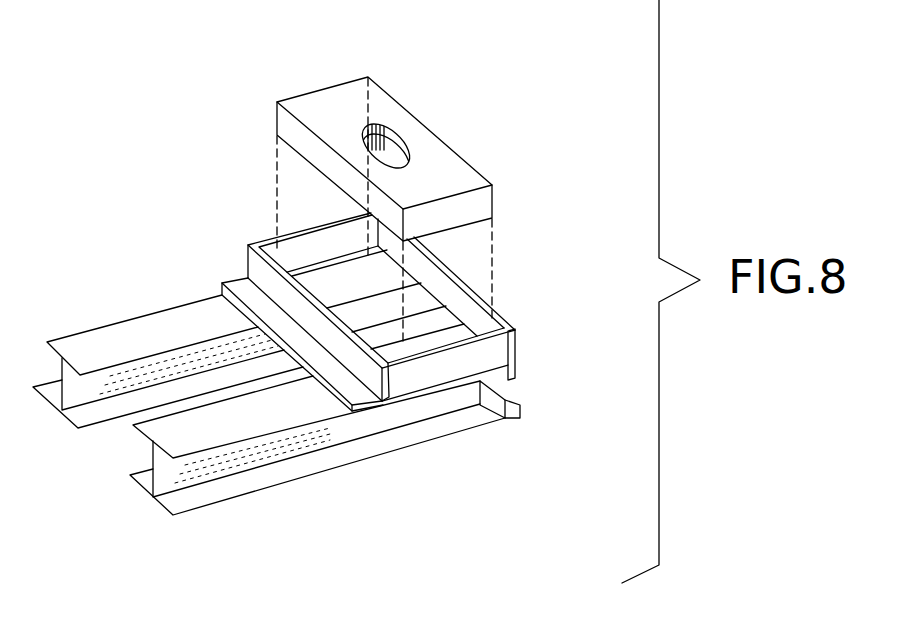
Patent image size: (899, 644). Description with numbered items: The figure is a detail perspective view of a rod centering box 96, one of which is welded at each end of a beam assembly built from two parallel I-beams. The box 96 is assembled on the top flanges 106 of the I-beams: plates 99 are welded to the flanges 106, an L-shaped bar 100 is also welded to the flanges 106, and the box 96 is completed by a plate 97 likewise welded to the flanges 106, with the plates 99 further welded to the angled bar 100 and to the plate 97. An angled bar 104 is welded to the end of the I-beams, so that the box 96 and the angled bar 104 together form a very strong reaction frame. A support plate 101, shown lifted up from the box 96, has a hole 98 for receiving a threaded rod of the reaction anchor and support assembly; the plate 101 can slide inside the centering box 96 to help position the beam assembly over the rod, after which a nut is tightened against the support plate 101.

The rod centering box 96 is at (178, 192).
The plate 97 is at (500, 316).
The hole 98 is at (403, 147).
The plate 99 is at (268, 244).
The L-shaped bar 100 is at (237, 277).
The support plate 101 is at (348, 103).
The angled bar 104 is at (521, 405).
The top flange 106 is at (269, 382).